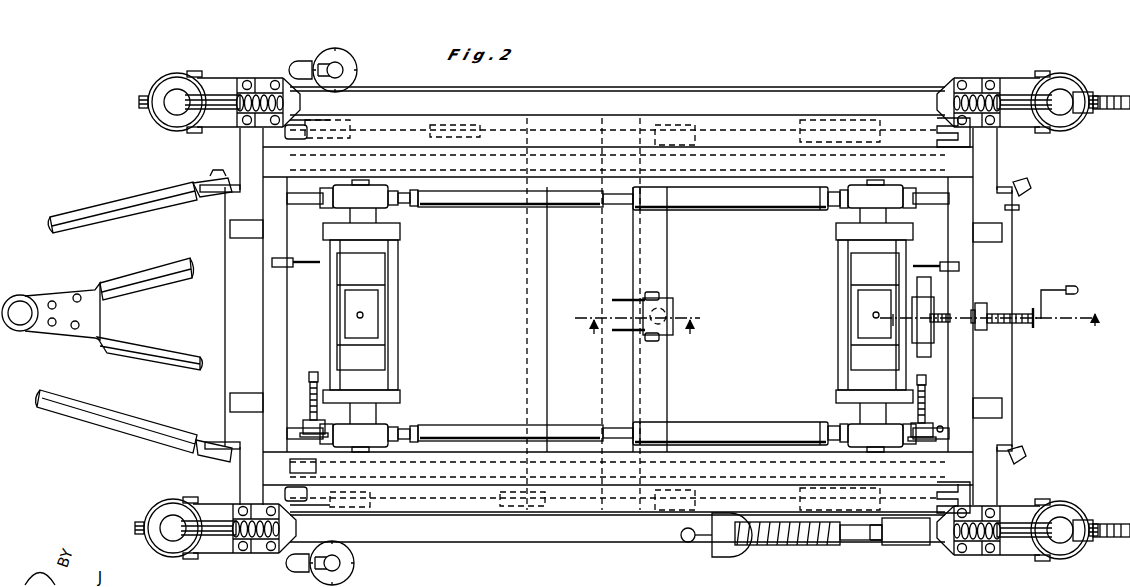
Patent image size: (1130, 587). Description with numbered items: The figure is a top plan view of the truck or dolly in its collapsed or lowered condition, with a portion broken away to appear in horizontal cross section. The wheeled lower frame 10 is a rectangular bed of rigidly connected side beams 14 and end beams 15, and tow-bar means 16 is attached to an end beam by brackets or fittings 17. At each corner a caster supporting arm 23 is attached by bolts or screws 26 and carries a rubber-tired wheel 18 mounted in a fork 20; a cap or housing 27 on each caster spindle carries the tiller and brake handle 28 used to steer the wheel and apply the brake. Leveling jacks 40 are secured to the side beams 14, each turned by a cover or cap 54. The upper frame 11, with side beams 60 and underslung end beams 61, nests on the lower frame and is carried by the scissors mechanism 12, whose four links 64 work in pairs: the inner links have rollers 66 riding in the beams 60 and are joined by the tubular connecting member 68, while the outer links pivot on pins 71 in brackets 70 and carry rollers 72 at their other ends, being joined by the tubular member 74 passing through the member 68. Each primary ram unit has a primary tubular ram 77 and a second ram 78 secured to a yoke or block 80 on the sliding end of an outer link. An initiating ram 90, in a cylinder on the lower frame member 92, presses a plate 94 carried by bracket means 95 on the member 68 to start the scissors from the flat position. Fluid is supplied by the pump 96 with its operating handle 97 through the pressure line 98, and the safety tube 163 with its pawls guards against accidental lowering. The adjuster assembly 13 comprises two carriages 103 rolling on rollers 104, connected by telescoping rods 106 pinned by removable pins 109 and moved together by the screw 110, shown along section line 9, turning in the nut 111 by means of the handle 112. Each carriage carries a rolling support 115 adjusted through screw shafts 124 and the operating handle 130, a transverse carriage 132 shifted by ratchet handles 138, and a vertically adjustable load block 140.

The section line 9 is at (995, 325).
The lower frame 10 is at (548, 560).
The upper frame 11 is at (702, 476).
The scissors mechanism 12 is at (840, 135).
The adjuster assembly 13 is at (300, 385).
The side beams 14 is at (784, 94).
The end beams 15 is at (232, 383).
The tow-bar means 16 is at (128, 200).
The brackets or fittings 17 is at (216, 176).
The rubber-tired wheel 18 is at (1110, 125).
The fork 20 is at (165, 72).
The caster supporting arm 23 is at (1003, 98).
The bolts or screws 26 is at (957, 85).
The cap or housing 27 is at (192, 526).
The tiller and brake handle 28 is at (242, 96).
The leveling jacks 40 is at (366, 66).
The cover or cap 54 is at (343, 60).
The side beams 60 is at (682, 158).
The end beams 61 is at (270, 246).
The links 64 is at (617, 468).
The roller 66 is at (302, 466).
The connecting member 68 is at (612, 266).
The brackets 70 is at (965, 137).
The bolts or pins 71 is at (946, 92).
The rollers 72 is at (300, 502).
The tubular member 74 is at (636, 366).
The primary tubular ram 77 is at (806, 132).
The second ram 78 is at (480, 130).
The yoke or block 80 is at (312, 130).
The initiating ram 90 is at (672, 305).
The lower frame member 92 is at (672, 288).
The plate 94 is at (673, 330).
The bracket means 95 is at (650, 296).
The pump 96 is at (766, 541).
The operating lever or handle 97 is at (690, 540).
The pressure line 98 is at (886, 538).
The carriages 103 is at (832, 218).
The rollers 104 is at (366, 186).
The telescoping tubular rods 106 is at (535, 203).
The removable pins 109 is at (680, 192).
The screw 110 is at (1017, 313).
The nut 111 is at (983, 304).
The handle 112 is at (1053, 286).
The supports 115 is at (406, 322).
The screw shafts 124 is at (920, 380).
The operating handle 130 is at (950, 440).
The carriages 132 is at (378, 366).
The ratchet handles 138 is at (304, 256).
The pad or block 140 is at (372, 298).
The shaft or tube 163 is at (545, 304).